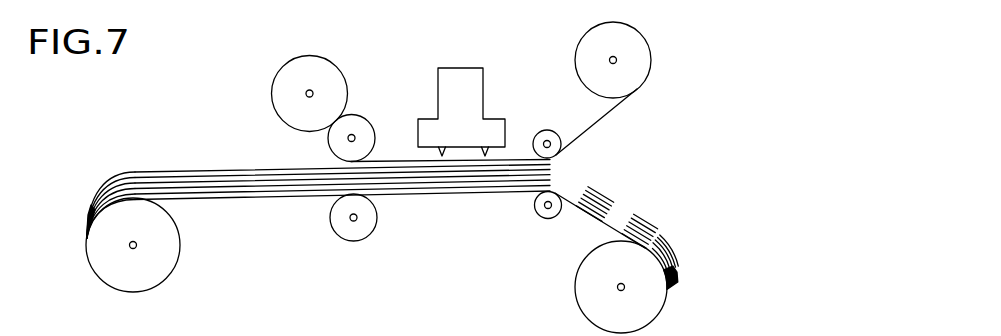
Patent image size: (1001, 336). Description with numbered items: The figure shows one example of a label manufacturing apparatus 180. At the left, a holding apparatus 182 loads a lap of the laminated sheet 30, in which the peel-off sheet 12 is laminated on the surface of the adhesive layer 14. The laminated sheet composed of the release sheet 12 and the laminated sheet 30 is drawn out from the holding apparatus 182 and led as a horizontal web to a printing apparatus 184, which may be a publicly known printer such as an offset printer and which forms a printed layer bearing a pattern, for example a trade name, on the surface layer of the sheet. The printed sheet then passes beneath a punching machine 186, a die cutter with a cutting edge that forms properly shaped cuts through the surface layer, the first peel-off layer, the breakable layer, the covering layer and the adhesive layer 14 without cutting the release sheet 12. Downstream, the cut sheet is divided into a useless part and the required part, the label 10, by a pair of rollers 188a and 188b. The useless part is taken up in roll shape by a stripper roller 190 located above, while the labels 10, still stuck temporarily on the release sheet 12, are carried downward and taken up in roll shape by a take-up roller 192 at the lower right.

The label 10 is at (605, 193).
The peel-off sheet 12 is at (212, 197).
The adhesive layer 14 is at (180, 185).
The laminated sheet 30 is at (145, 180).
The label manufacturing apparatus 180 is at (468, 18).
The holding apparatus 182 is at (137, 247).
The printing apparatus 184 is at (350, 112).
The punching machine 186 is at (478, 65).
The roller 188a is at (546, 131).
The roller 188b is at (540, 218).
The stripper roller 190 is at (617, 62).
The take-up roller 192 is at (617, 289).